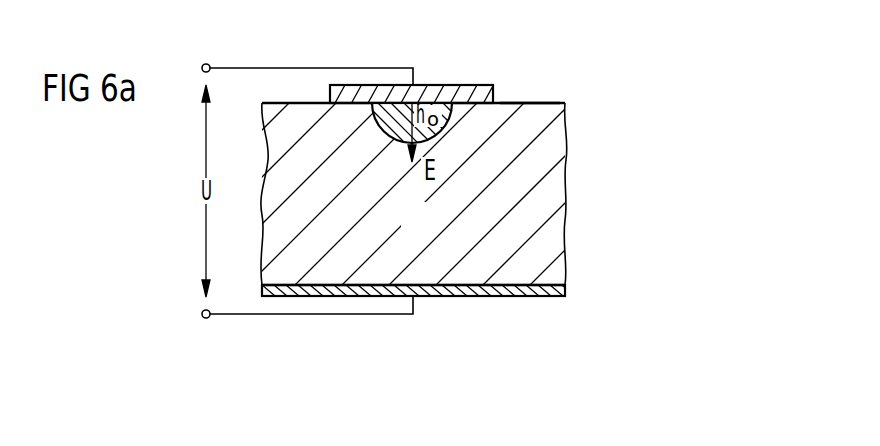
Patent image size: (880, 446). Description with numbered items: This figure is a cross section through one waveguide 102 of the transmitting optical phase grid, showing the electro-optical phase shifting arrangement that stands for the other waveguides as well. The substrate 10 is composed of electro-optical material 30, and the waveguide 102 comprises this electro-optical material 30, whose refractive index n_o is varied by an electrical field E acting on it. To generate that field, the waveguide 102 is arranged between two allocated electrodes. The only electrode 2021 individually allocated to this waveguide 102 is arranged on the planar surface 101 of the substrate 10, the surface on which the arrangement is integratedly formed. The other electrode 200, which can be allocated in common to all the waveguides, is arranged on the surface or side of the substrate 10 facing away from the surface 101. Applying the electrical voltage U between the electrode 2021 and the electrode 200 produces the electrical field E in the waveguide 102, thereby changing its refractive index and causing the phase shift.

The substrate 10 is at (548, 174).
The planar surface of the substrate 101 is at (536, 96).
The waveguide 102 is at (393, 112).
The electrode 2021 is at (455, 85).
The electrode 200 is at (487, 297).
The electro-optical material 30 is at (417, 217).